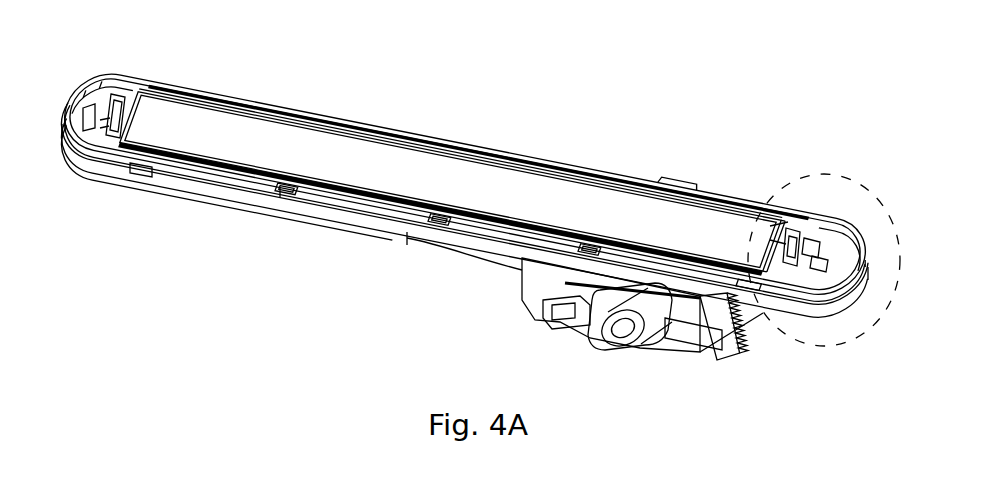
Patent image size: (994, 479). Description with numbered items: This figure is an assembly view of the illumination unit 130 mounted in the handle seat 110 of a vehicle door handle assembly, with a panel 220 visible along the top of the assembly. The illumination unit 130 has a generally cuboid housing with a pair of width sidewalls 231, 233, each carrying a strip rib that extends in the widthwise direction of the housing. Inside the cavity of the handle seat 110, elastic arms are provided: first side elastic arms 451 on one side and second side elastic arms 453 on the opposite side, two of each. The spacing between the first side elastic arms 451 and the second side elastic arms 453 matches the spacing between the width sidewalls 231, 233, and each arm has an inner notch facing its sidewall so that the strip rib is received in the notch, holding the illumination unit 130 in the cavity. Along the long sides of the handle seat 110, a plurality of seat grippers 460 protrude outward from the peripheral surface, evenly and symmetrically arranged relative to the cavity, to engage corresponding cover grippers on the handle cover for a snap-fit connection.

The handle seat 110 is at (700, 172).
The illumination unit 130 is at (518, 188).
The cover panel 220 is at (395, 142).
The width sidewall 231 is at (800, 238).
The width sidewall 233 is at (84, 97).
The first side elastic arm 451 is at (825, 240).
The second side elastic arm 453 is at (119, 97).
The seat gripper 460 is at (286, 206).